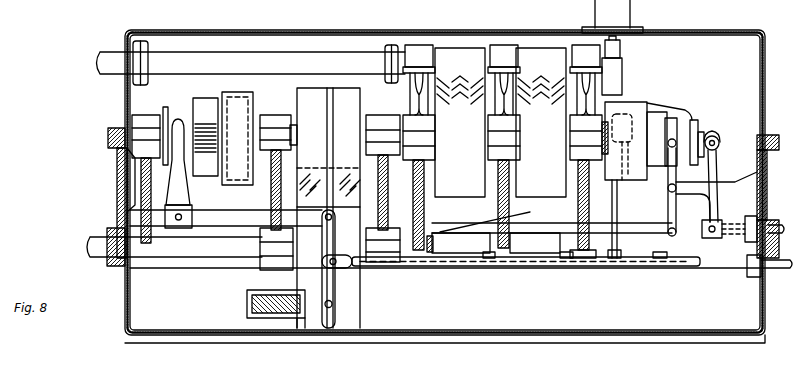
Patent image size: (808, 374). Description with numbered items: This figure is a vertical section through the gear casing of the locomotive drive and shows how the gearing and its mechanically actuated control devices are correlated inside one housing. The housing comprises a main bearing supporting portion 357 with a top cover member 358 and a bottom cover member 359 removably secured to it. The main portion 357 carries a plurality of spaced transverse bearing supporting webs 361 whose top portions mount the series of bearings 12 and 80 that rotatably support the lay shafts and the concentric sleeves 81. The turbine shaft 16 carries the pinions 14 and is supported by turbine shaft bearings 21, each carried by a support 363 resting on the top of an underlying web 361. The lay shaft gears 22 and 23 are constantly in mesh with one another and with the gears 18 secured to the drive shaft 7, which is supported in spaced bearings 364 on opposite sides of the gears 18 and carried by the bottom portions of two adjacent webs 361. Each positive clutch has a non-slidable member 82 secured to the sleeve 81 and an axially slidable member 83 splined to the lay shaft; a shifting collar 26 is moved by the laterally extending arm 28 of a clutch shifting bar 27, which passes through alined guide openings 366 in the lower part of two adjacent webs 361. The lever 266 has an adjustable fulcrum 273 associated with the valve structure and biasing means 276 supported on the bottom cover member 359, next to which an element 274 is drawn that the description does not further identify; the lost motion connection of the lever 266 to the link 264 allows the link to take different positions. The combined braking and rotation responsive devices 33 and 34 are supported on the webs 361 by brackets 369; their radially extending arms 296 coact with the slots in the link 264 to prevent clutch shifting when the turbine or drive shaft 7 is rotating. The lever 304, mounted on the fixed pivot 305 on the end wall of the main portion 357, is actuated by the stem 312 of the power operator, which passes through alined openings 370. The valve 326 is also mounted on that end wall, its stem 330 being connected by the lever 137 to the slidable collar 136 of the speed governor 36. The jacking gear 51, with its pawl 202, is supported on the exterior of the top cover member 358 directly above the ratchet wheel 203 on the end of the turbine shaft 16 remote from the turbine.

The drive shaft 7 is at (183, 258).
The bearings 12 is at (160, 112).
The pinions 14 is at (500, 122).
The turbine shaft 16 is at (302, 55).
The gears 18 is at (358, 303).
The turbine shaft bearings 21 is at (502, 80).
The gears 22 is at (497, 186).
The gears 23 is at (342, 78).
The shifting collar 26 is at (170, 114).
The clutch shifting bar 27 is at (206, 210).
The laterally extending arm 28 is at (185, 193).
The combined braking and rotation responsive device 33 is at (708, 128).
The combined braking and rotation responsive device 34 is at (428, 230).
The speed governor 36 is at (632, 182).
The jacking gear 51 is at (631, 16).
The bearings 80 is at (266, 113).
The concentric sleeve 81 is at (292, 113).
The non-slidable member 82 is at (252, 93).
The axially slidable member 83 is at (218, 100).
The slidable collar 136 is at (684, 120).
The lever 137 is at (668, 210).
The pawl 202 is at (620, 50).
The ratchet wheel 203 is at (622, 88).
The link 264 is at (445, 266).
The lever 266 is at (336, 282).
The adjustable fulcrum 273 is at (344, 304).
The support 274 is at (312, 286).
The valve structure and biasing means 276 is at (246, 290).
The radially extending arm 296 is at (618, 205).
The lever 304 is at (719, 163).
The fixed pivot 305 is at (728, 170).
The stem 312 is at (560, 234).
The valve 326 is at (739, 212).
The stem 330 is at (685, 240).
The main bearing supporting portion 357 is at (774, 200).
The top cover member 358 is at (765, 103).
The bottom cover member 359 is at (764, 314).
The bearing supporting webs 361 is at (140, 176).
The support 363 is at (415, 97).
The bearings 364 is at (266, 272).
The guide openings 366 is at (160, 182).
The bracket 369 is at (448, 224).
The openings 370 is at (590, 240).